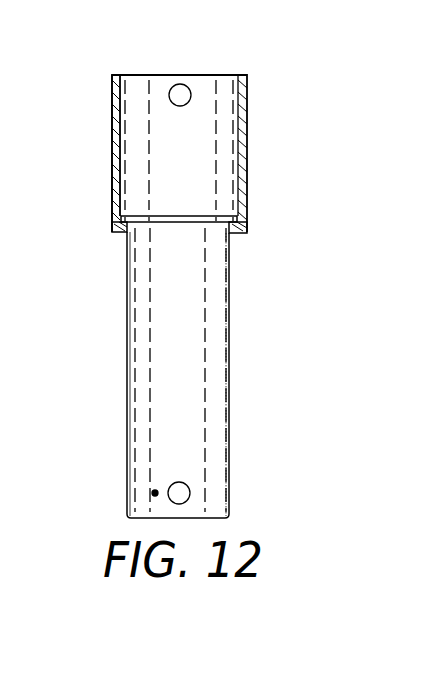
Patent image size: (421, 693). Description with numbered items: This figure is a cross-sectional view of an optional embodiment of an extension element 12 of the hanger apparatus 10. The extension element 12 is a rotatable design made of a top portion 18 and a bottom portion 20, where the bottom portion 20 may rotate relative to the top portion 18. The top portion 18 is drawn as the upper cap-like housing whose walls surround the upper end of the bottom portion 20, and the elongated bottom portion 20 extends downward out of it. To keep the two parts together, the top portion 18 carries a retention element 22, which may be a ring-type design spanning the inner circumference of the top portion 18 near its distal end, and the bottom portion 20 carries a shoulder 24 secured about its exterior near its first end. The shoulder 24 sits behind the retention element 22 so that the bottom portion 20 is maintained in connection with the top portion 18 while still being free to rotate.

The hanger apparatus 10 is at (292, 112).
The extension element 12 is at (222, 75).
The top portion 18 is at (113, 132).
The bottom portion 20 is at (128, 363).
The retention element 22 is at (125, 230).
The shoulder 24 is at (210, 215).